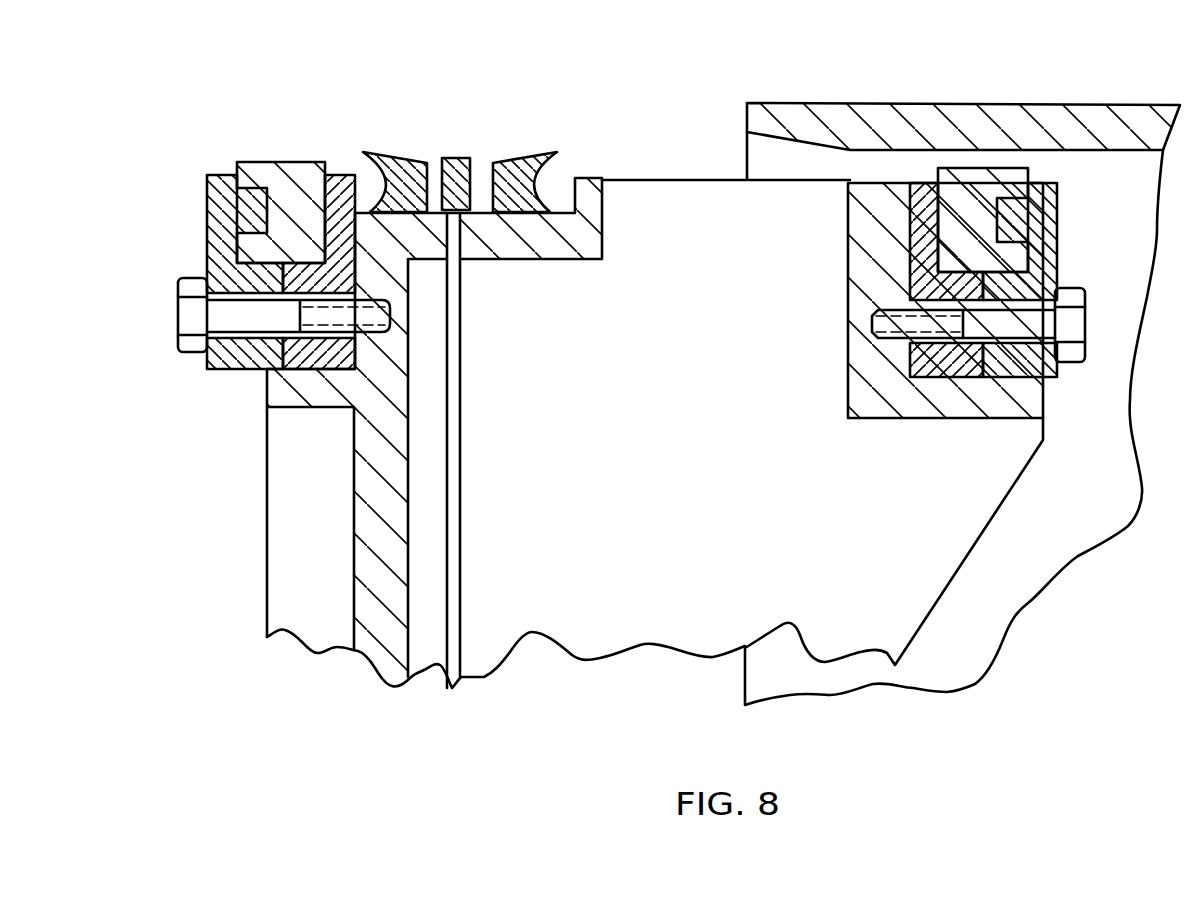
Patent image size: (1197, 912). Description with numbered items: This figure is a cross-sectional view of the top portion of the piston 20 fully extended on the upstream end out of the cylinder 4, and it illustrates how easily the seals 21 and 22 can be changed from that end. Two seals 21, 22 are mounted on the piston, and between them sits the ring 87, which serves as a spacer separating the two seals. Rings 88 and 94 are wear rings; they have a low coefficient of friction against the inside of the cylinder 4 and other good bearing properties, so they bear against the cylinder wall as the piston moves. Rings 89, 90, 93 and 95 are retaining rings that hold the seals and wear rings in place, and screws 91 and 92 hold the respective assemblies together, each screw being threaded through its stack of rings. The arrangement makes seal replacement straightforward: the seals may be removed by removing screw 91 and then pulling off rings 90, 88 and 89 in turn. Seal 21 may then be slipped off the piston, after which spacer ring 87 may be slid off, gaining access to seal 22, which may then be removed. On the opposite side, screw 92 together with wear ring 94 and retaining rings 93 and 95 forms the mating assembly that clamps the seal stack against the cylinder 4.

The cylinder 4 is at (1093, 103).
The piston 20 is at (267, 463).
The seal 21 is at (398, 157).
The seal 22 is at (525, 153).
The spacer ring 87 is at (465, 157).
The wear ring 88 is at (290, 162).
The retaining ring 89 is at (345, 175).
The retaining ring 90 is at (218, 175).
The screw 91 is at (178, 293).
The screw 92 is at (1085, 325).
The retaining ring 93 is at (1058, 230).
The wear ring 94 is at (973, 168).
The retaining ring 95 is at (930, 180).